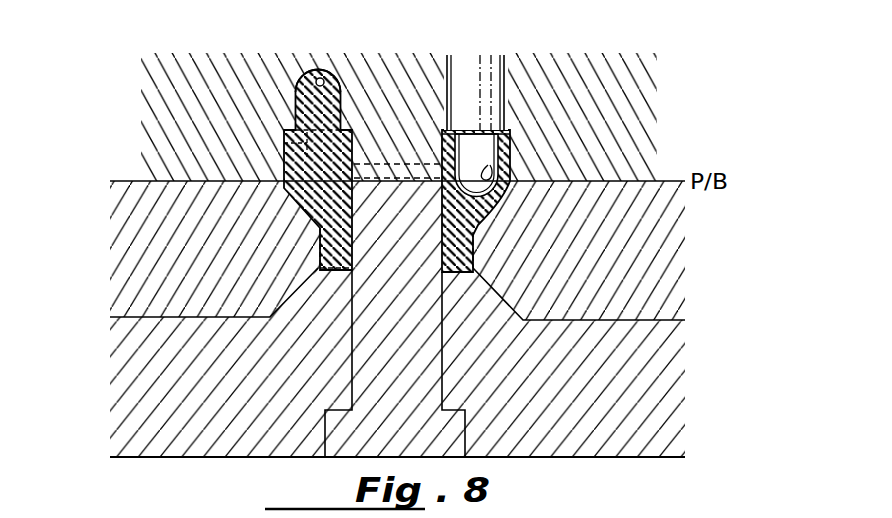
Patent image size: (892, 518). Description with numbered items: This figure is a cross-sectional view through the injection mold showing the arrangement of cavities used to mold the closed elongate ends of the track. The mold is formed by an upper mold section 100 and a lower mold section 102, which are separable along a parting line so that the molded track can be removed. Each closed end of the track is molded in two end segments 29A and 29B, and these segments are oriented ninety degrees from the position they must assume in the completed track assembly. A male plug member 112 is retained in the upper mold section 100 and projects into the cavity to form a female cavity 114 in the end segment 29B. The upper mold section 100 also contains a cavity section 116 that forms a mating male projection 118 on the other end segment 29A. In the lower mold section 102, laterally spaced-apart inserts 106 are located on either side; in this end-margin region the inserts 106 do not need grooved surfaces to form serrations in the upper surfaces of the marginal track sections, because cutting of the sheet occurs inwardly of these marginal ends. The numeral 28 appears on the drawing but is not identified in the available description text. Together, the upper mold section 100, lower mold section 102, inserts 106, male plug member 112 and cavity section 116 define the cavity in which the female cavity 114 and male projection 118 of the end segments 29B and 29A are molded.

The pin 28 is at (333, 46).
The end segment 29A is at (283, 143).
The end segment 29B is at (488, 165).
The upper mold section 100 is at (637, 100).
The lower mold section 102 is at (650, 386).
The inserts 106 is at (140, 249).
The male plug member 112 is at (467, 82).
The female cavity 114 is at (496, 193).
The cavity section 116 is at (319, 80).
The male projection 118 is at (295, 88).